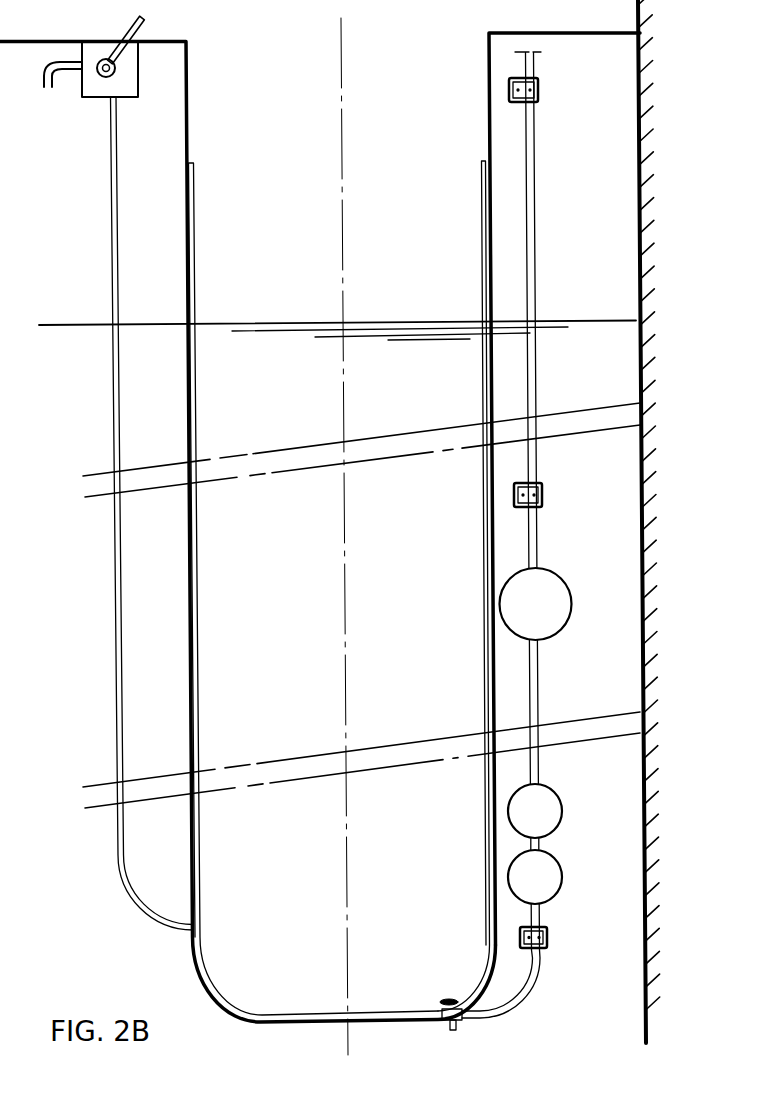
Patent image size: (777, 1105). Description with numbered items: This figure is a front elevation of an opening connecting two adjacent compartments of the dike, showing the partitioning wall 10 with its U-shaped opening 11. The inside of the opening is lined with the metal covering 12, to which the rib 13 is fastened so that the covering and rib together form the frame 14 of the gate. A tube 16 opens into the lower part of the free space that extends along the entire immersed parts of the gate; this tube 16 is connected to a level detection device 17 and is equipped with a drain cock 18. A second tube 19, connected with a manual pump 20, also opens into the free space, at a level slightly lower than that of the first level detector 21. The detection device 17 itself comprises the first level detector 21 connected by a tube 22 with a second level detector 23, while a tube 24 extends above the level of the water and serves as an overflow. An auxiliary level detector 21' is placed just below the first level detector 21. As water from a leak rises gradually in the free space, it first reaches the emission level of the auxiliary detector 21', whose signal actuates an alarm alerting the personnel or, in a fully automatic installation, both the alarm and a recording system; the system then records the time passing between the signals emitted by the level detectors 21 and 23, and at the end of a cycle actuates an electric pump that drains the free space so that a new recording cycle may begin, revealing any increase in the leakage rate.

The partitioning wall 10 is at (158, 165).
The U-shaped opening 11 is at (487, 99).
The metal covering 12 is at (187, 80).
The rib 13 is at (195, 218).
The frame 14 is at (482, 178).
The tube 16 is at (530, 994).
The level detection device 17 is at (567, 683).
The drain cock 18 is at (447, 1024).
The second tube 19 is at (117, 446).
The manual pump 20 is at (102, 87).
The first level detector 21 is at (541, 808).
The auxiliary level detector 21' is at (546, 868).
The tube 22 is at (542, 768).
The second level detector 23 is at (551, 577).
The tube 24 is at (533, 274).